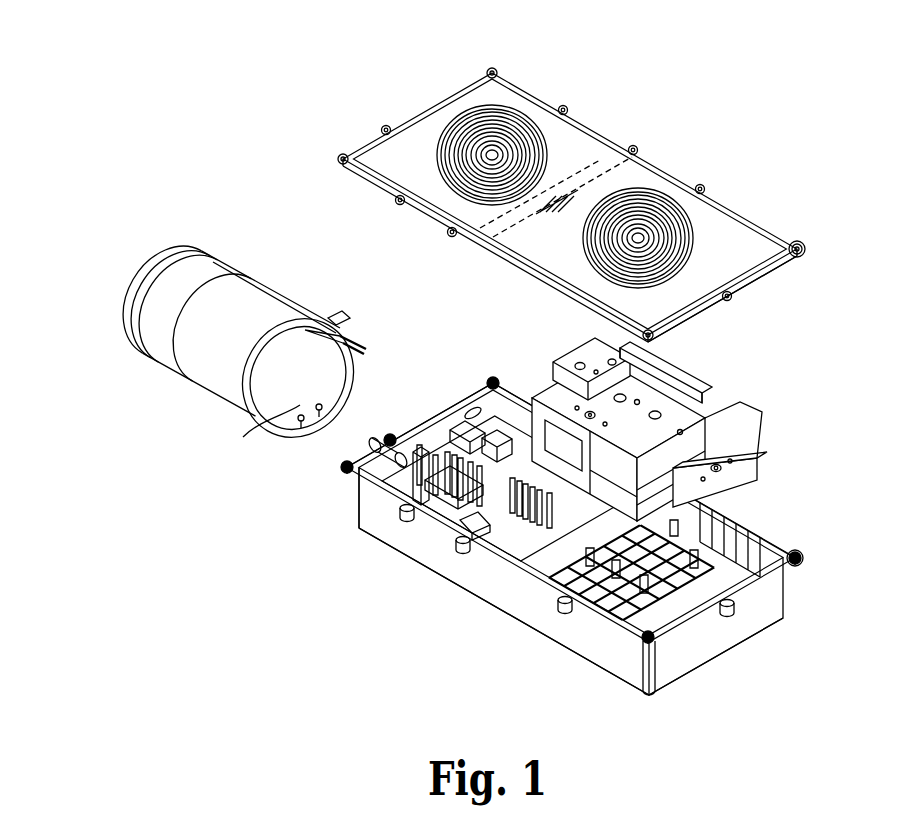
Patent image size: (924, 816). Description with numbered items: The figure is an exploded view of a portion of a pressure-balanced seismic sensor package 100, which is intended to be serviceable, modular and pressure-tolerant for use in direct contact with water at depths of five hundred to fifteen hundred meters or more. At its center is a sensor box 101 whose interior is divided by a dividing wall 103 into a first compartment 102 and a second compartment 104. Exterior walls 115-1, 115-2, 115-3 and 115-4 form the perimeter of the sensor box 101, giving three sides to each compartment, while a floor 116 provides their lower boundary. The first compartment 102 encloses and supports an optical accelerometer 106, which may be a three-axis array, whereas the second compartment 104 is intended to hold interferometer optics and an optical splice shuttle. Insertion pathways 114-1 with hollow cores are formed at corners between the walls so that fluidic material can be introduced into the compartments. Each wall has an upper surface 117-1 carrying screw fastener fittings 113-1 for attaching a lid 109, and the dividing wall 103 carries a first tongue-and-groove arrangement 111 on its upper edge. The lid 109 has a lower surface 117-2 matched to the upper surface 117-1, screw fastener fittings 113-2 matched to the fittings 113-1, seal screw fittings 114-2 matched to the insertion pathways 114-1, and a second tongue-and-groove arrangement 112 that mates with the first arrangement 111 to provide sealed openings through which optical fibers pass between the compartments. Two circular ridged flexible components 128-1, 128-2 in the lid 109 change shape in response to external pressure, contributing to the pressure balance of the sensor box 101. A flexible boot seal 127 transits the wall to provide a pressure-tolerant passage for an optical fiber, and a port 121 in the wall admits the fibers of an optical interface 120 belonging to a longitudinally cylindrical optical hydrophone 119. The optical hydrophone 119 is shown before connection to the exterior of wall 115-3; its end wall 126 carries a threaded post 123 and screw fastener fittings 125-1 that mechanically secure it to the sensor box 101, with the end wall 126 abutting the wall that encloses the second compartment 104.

The pressure-balanced seismic sensor package 100 is at (168, 108).
The sensor box 101 is at (460, 691).
The first compartment 102 is at (615, 628).
The dividing wall 103 is at (533, 541).
The second compartment 104 is at (386, 504).
The optical accelerometer 106 is at (712, 394).
The lid 109 is at (660, 145).
The first tongue-and-groove arrangement 111 is at (567, 511).
The second tongue-and-groove arrangement 112 is at (573, 188).
The screw fastener fittings 113-1 is at (803, 556).
The screw fastener fittings 113-2 is at (801, 250).
The insertion pathway 114-1 is at (495, 382).
The seal screw fittings 114-2 is at (493, 77).
The exterior wall 115-1 is at (753, 625).
The exterior wall 115-2 is at (477, 581).
The exterior wall 115-3 is at (400, 410).
The exterior wall 115-4 is at (765, 517).
The floor 116 is at (790, 614).
The upper surface 117-1 is at (742, 512).
The lower surface 117-2 is at (757, 288).
The optical hydrophone 119 is at (200, 392).
The optical interface 120 is at (340, 322).
The port 121 is at (470, 412).
The threaded post 123 is at (307, 345).
The screw fastener fittings 125-1 is at (318, 440).
The end wall 126 is at (300, 406).
The flexible boot seal 127 is at (388, 438).
The flexible component 128-1 is at (590, 253).
The flexible component 128-2 is at (449, 193).